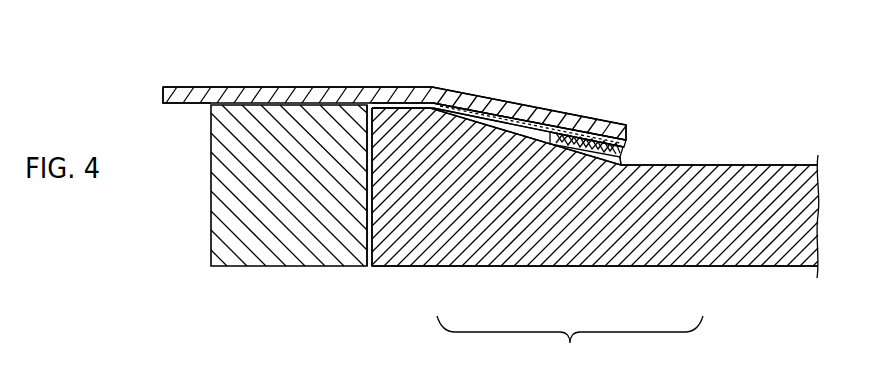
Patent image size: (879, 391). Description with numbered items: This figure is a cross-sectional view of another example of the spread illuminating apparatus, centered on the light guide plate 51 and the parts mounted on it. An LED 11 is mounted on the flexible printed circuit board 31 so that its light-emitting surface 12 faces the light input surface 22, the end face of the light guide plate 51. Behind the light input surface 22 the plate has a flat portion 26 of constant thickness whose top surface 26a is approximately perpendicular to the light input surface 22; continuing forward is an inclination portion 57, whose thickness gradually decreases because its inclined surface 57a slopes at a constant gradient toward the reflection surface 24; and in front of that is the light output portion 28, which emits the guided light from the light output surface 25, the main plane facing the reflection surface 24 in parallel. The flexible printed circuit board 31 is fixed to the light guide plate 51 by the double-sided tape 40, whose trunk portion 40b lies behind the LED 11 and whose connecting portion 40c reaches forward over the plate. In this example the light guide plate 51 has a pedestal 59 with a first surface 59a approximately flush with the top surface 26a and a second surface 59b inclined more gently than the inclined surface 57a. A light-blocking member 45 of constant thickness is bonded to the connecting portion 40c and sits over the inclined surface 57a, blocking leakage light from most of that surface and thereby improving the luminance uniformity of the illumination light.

The LED 11 is at (282, 252).
The light input surface 22 is at (368, 238).
The light-emitting surface 12 is at (377, 245).
The flat portion 26 is at (400, 215).
The inclination portion 57 is at (567, 255).
The light output portion 28 is at (685, 257).
The light guide plate 51 is at (570, 347).
The reflection surface 24 is at (772, 268).
The light output surface 25 is at (772, 165).
The inclined surface 57a is at (560, 140).
The double-sided tape 40 is at (533, 116).
The flexible printed circuit board 31 is at (283, 92).
The trunk portion 40b is at (196, 98).
The connecting portion 40c is at (592, 117).
The pedestal 59 is at (515, 118).
The first surface 59a is at (529, 121).
The second surface 59b is at (566, 130).
The top surface 26a is at (395, 107).
The light-blocking member 45 is at (627, 143).